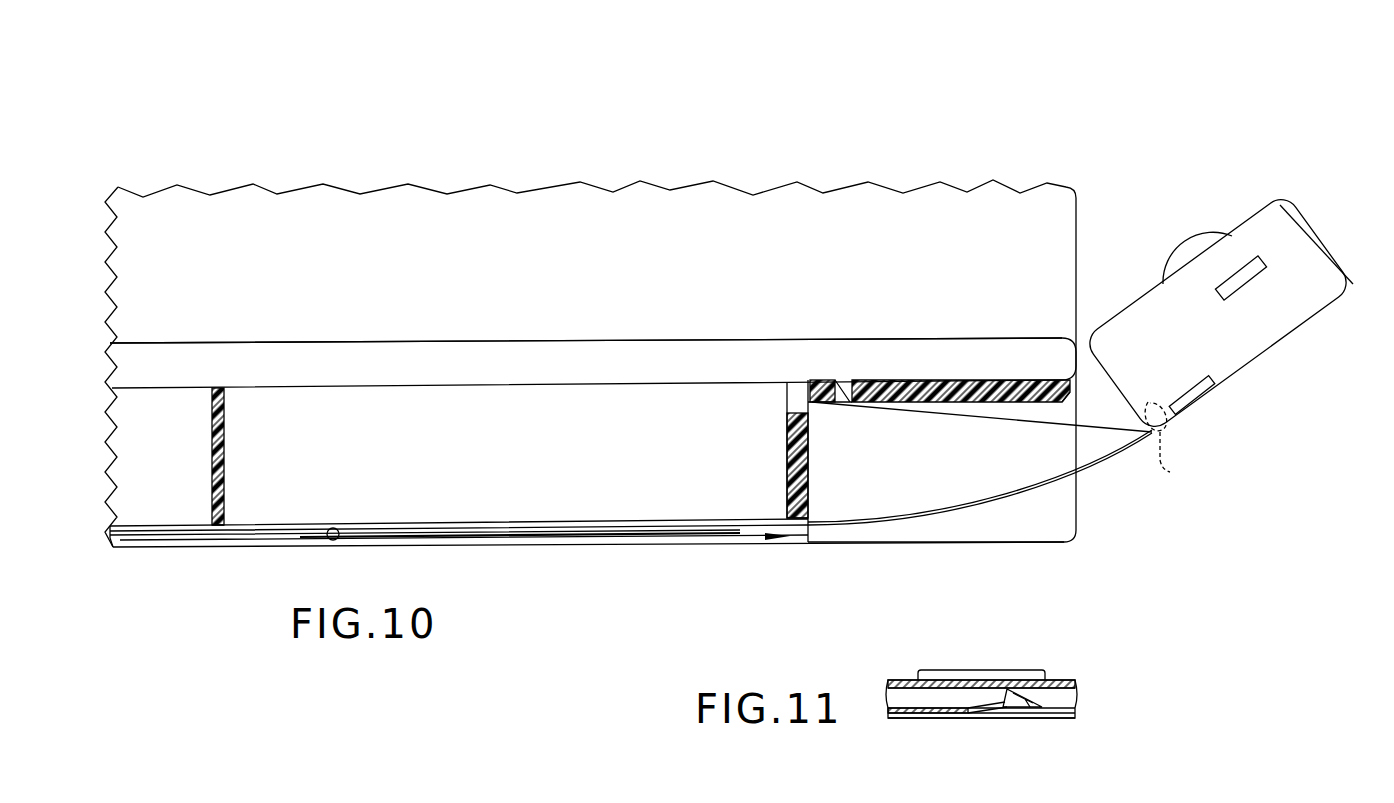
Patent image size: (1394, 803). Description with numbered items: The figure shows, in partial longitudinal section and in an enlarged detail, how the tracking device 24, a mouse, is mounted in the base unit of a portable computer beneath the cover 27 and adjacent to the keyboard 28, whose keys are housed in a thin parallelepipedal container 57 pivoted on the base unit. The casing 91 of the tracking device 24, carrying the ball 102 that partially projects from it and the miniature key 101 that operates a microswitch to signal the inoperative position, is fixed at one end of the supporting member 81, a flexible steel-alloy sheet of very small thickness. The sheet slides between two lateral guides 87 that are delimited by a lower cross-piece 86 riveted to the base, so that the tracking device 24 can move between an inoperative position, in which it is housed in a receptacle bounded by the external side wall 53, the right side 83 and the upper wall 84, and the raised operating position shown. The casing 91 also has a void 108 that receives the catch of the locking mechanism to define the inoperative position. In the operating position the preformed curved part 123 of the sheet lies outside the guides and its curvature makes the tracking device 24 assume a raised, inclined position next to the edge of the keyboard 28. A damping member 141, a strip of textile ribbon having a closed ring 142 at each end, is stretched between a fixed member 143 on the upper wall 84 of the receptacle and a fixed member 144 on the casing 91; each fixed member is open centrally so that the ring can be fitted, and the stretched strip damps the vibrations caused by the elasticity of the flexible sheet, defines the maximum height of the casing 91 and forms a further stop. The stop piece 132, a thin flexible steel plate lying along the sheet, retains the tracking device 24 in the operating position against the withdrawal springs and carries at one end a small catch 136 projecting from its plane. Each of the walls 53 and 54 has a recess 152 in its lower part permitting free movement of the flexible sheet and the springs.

In FIG. 10, the tracking device 24 is at (1286, 188).
In FIG. 10, the cover 27 is at (569, 206).
In FIG. 10, the keyboard 28 is at (365, 325).
In FIG. 10, the external side wall 53 is at (787, 450).
In FIG. 10, the internal side wall 54 is at (224, 437).
In FIG. 10, the parallelepipedal container 57 is at (535, 353).
In FIG. 10, the supporting member 81 is at (1092, 505).
In FIG. 11, the supporting member 81 is at (1075, 684).
In FIG. 10, the right side 83 is at (998, 405).
In FIG. 10, the upper wall 84 is at (917, 392).
In FIG. 10, the lower cross-piece 86 is at (158, 546).
In FIG. 11, the lower cross-piece 86 is at (1060, 716).
In FIG. 10, the lateral guides 87 is at (460, 508).
In FIG. 11, the lateral guides 87 is at (968, 670).
In FIG. 10, the casing 91 is at (1302, 248).
In FIG. 10, the miniature key 101 is at (1210, 403).
In FIG. 10, the ball 102 is at (1193, 257).
In FIG. 10, the void 108 is at (1237, 298).
In FIG. 10, the preformed curved part 123 is at (1047, 493).
In FIG. 11, the stop piece 132 is at (930, 713).
In FIG. 10, the small catch 136 is at (782, 537).
In FIG. 11, the small catch 136 is at (1005, 708).
In FIG. 10, the damping member 141 is at (950, 417).
In FIG. 10, the closed ring 142 is at (832, 402).
In FIG. 10, the fixed member 143 is at (812, 383).
In FIG. 10, the fixed member 144 is at (1150, 403).
In FIG. 10, the recess 152 is at (220, 520).